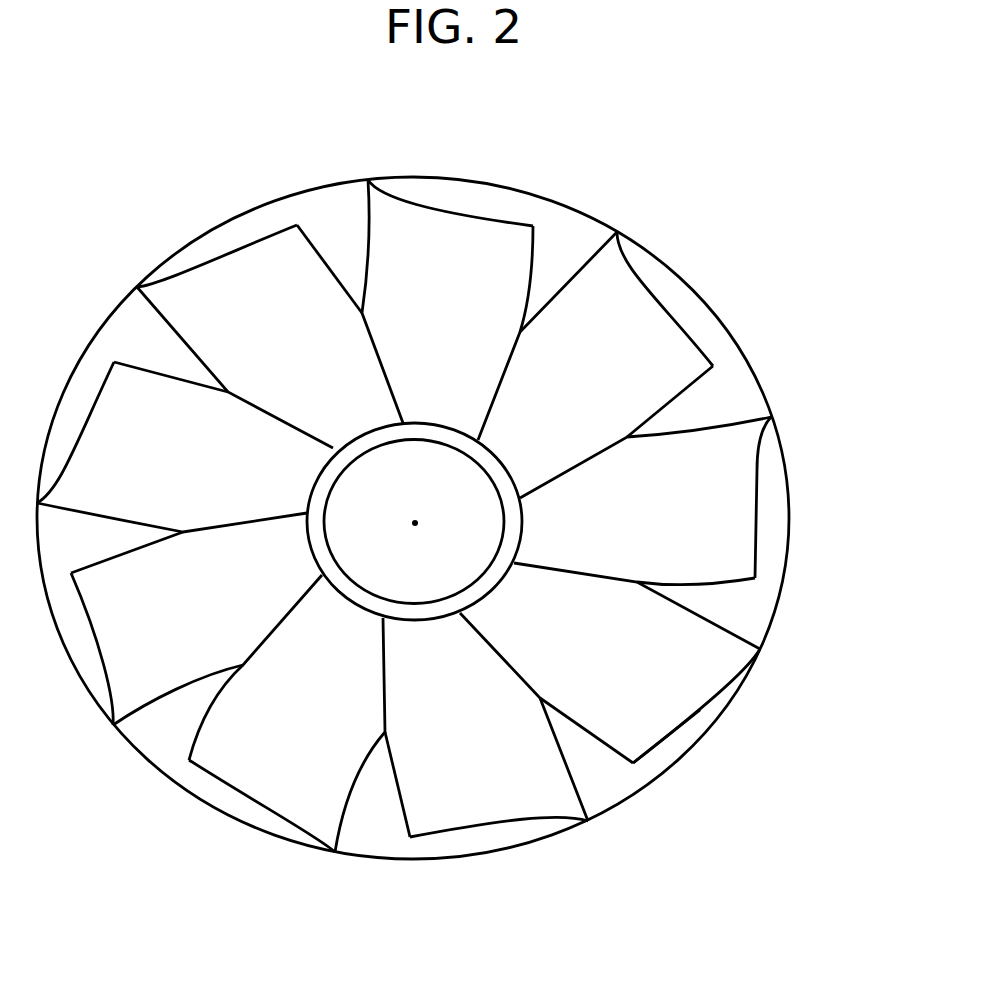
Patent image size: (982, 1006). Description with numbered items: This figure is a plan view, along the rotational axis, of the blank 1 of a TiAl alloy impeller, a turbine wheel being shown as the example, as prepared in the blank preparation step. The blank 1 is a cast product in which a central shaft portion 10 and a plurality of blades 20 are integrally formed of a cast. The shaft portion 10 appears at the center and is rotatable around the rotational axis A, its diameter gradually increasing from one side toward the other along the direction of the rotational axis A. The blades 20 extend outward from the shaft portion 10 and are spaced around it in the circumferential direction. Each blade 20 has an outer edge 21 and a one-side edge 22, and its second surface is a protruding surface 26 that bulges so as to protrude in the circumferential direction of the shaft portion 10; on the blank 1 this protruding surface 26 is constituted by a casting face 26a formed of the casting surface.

The blank 1 is at (172, 171).
The rotational axis A is at (415, 523).
The shaft portion 10 is at (437, 423).
The blade 20 is at (640, 300).
The outer edge 21 is at (762, 530).
The one-side edge 22 is at (722, 583).
The protruding surface 26 is at (673, 683).
The casting face 26a is at (643, 718).